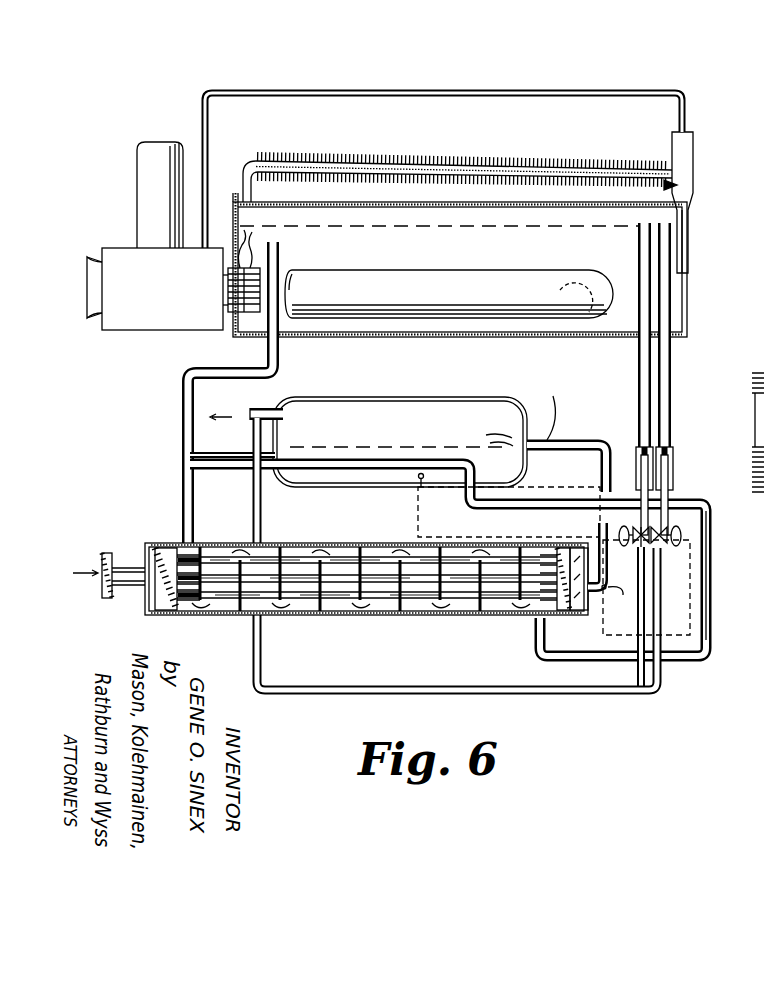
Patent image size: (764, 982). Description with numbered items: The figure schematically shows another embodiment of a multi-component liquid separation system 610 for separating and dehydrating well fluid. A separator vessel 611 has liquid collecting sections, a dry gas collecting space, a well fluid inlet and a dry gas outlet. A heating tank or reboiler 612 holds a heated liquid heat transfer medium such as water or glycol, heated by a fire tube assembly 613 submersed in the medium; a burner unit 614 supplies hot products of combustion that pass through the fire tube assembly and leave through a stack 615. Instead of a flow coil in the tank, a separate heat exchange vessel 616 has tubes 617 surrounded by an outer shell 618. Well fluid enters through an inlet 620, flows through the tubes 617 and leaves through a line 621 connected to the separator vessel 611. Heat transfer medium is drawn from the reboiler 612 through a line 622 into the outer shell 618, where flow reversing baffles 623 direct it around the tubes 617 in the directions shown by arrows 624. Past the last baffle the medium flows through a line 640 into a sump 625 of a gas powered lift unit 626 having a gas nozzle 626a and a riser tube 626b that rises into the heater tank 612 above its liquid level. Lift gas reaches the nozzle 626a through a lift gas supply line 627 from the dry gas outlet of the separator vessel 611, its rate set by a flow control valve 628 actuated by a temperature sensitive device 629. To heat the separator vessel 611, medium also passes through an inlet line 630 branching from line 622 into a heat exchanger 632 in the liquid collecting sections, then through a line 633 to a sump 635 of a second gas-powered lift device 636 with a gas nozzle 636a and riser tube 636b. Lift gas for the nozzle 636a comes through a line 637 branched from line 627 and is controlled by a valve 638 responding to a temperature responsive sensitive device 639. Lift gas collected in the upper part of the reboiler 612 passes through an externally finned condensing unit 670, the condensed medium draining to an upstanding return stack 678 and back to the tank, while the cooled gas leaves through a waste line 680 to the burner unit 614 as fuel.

The multi-component liquid separation system 610 is at (420, 717).
The separator vessel 611 is at (356, 398).
The heating tank or reboiler 612 is at (411, 337).
The fire tube assembly 613 is at (392, 318).
The burner unit 614 is at (136, 332).
The stack 615 is at (136, 178).
The heat exchange vessel 616 is at (371, 572).
The tubes 617 is at (350, 622).
The outer shell 618 is at (400, 615).
The inlet 620 is at (130, 560).
The line 621 is at (598, 548).
The line 622 is at (182, 470).
The flow reversing baffles 623 is at (238, 552).
The arrows 624 is at (198, 550).
The sump 625 is at (682, 506).
The gas powered lift unit 626 is at (668, 449).
The gas nozzle 626a is at (671, 465).
The riser tube 626b is at (672, 352).
The lift gas supply line 627 is at (661, 677).
The flow control valve 628 is at (700, 532).
The temperature sensitive device 629 is at (639, 579).
The inlet line 630 is at (207, 468).
The heat exchanger 632 is at (318, 472).
The line 633 is at (484, 512).
The sump 635 is at (635, 490).
The gas-powered lift device 636 is at (640, 446).
The gas nozzle 636a is at (641, 470).
The riser tube 636b is at (637, 352).
The line 637 is at (637, 677).
The valve 638 is at (603, 523).
The temperature responsive sensitive device 639 is at (419, 478).
The line 640 is at (713, 625).
The condensing unit 670 is at (518, 156).
The return stack 678 is at (695, 178).
The waste line 680 is at (360, 92).